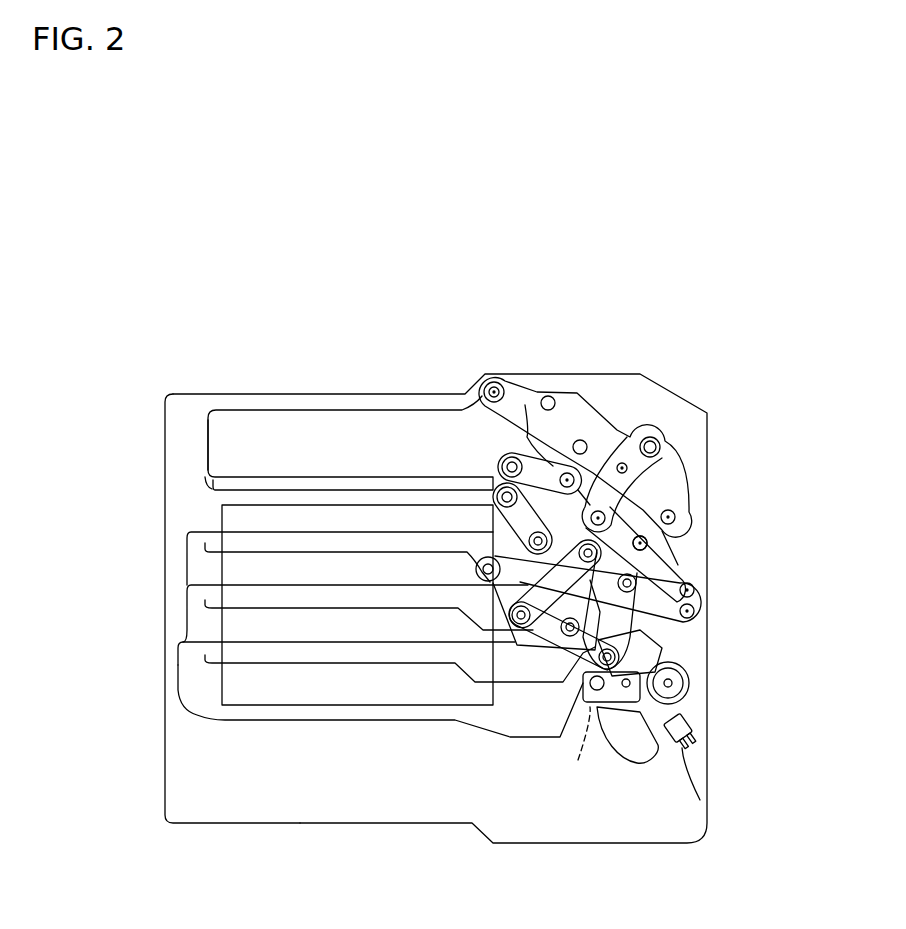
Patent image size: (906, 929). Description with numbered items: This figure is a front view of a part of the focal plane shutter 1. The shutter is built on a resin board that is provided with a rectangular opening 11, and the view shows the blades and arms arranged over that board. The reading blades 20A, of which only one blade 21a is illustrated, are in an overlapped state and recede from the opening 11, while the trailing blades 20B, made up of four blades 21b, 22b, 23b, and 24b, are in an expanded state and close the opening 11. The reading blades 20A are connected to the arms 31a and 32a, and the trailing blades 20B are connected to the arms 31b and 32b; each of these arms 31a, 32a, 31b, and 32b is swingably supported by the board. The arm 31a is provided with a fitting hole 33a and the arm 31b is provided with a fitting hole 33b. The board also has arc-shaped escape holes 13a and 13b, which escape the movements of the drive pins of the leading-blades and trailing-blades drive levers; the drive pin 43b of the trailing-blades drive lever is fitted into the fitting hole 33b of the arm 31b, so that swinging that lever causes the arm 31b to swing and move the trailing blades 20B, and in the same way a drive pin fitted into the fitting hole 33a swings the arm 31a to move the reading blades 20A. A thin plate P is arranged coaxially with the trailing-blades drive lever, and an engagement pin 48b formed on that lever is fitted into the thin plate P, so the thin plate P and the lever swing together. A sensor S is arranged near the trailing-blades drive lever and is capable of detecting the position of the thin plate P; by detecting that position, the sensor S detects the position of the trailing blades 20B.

The focal plane shutter 1 is at (695, 358).
The opening 11 is at (222, 678).
The escape hole 13a is at (627, 427).
The escape hole 13b is at (643, 767).
The reading blades 20A is at (287, 409).
The trailing blades 20B is at (197, 702).
The blade 21a is at (235, 435).
The blade 21b is at (203, 513).
The blade 22b is at (203, 567).
The blade 23b is at (203, 623).
The blade 24b is at (203, 680).
The arm 31a is at (663, 492).
The arm 31b is at (648, 665).
The arm 32a is at (678, 573).
The arm 32b is at (665, 608).
The fitting hole 33a is at (632, 466).
The fitting hole 33b is at (580, 705).
The drive pin 43b is at (578, 760).
The engagement pin 48b is at (690, 683).
The sensor S is at (688, 727).
The thin plate P is at (682, 748).